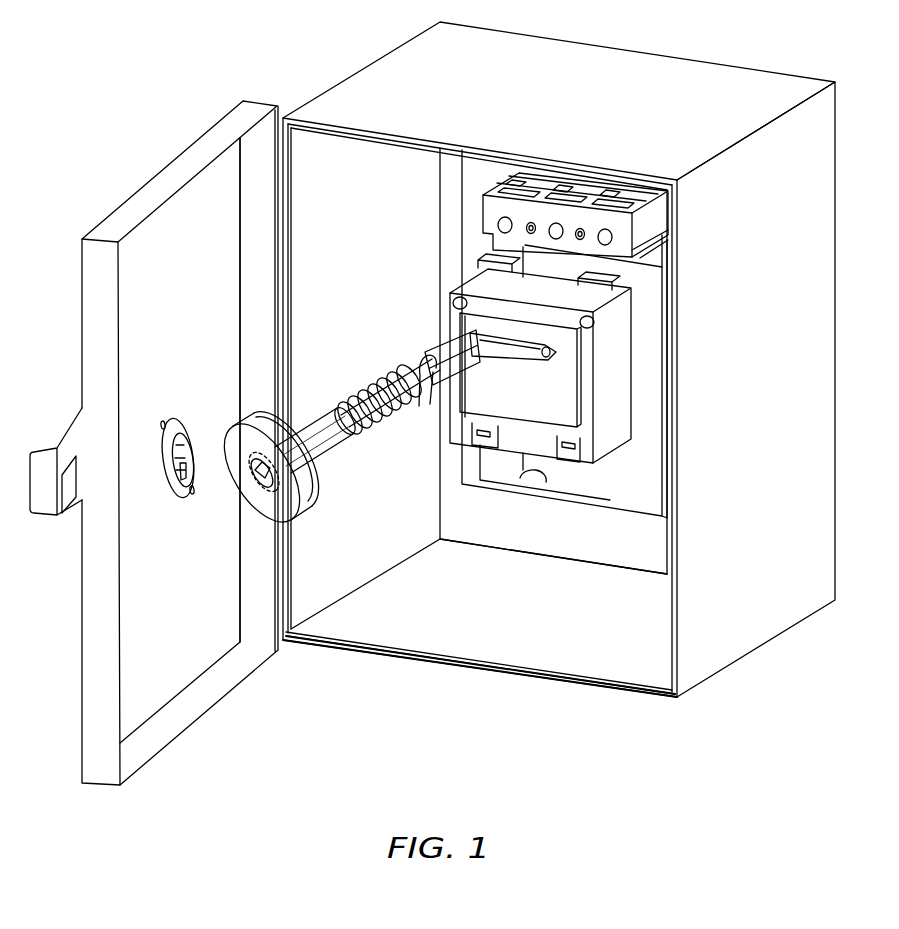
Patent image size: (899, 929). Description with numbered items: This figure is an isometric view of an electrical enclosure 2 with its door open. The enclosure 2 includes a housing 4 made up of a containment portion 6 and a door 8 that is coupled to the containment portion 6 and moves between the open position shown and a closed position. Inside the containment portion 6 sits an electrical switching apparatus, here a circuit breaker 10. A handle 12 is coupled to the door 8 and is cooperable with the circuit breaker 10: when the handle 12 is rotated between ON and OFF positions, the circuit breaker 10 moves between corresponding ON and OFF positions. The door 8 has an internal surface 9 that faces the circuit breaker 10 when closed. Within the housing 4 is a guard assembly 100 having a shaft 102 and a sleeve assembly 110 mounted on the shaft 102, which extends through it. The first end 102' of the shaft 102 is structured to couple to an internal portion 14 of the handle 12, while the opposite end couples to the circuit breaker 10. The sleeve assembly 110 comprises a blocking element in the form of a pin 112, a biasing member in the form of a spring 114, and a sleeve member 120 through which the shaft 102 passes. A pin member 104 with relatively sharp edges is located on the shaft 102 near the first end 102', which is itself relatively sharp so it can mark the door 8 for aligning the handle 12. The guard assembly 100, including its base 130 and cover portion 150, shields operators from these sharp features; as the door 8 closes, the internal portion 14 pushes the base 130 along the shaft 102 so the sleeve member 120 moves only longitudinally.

The electrical enclosure 2 is at (222, 28).
The housing 4 is at (337, 681).
The containment portion 6 is at (734, 624).
The door 8 is at (160, 167).
The internal surface 9 is at (213, 201).
The circuit breaker 10 is at (486, 218).
The handle 12 is at (58, 424).
The internal portion 14 is at (194, 468).
The guard assembly 100 is at (315, 329).
The shaft 102 is at (469, 432).
The first end 102' is at (235, 520).
The pin member 104 is at (241, 432).
The sleeve assembly 110 is at (346, 389).
The pin 112 is at (426, 347).
The spring 114 is at (366, 387).
The sleeve member 120 is at (230, 488).
The base 130 is at (299, 536).
The cover portion 150 is at (308, 419).